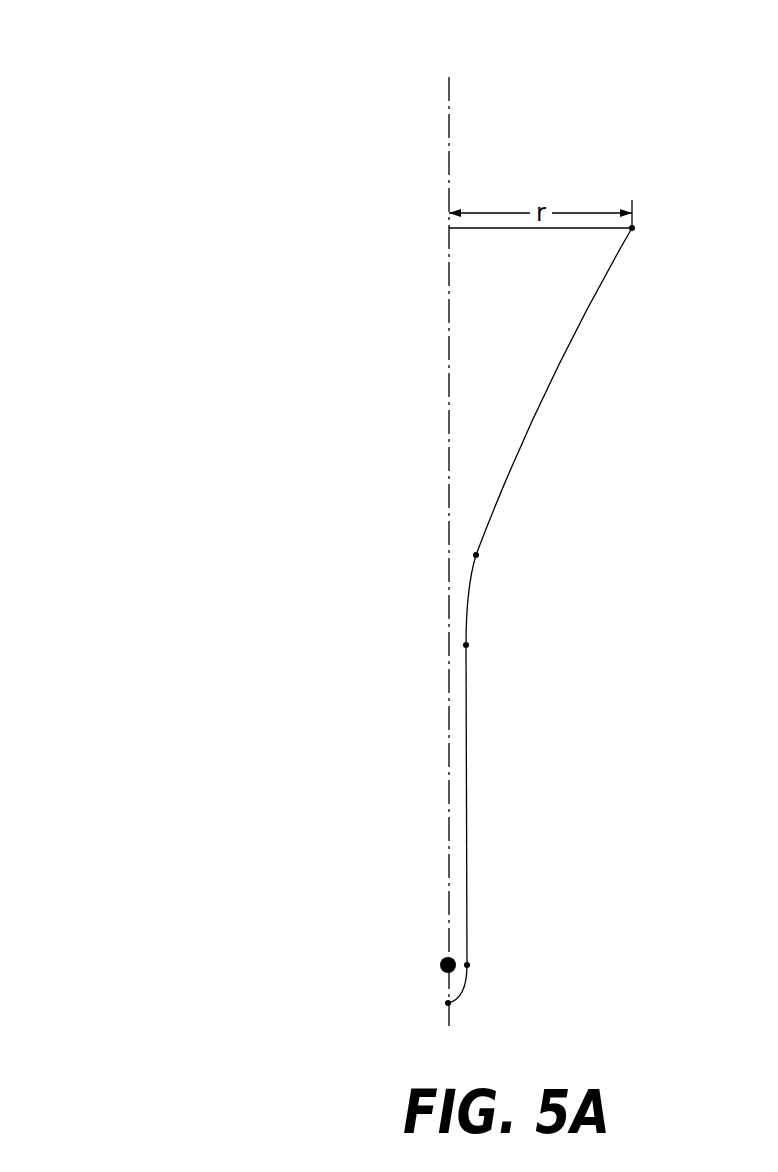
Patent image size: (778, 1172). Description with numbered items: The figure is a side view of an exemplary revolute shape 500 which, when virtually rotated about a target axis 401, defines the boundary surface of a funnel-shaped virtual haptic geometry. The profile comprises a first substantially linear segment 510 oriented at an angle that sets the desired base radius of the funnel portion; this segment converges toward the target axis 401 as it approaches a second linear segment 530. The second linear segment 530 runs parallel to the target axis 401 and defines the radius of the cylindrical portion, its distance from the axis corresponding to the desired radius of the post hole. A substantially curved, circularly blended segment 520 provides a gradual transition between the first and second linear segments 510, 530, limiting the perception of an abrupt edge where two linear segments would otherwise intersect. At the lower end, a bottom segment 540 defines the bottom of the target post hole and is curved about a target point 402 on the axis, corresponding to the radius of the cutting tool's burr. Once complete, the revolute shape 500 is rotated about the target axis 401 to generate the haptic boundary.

The revolute shape 500 is at (178, 108).
The target axis 401 is at (449, 107).
The target point 402 is at (440, 965).
The first substantially linear segment 510 is at (565, 350).
The substantially curved segment 520 is at (467, 601).
The second linear segment 530 is at (467, 830).
The bottom segment 540 is at (468, 985).